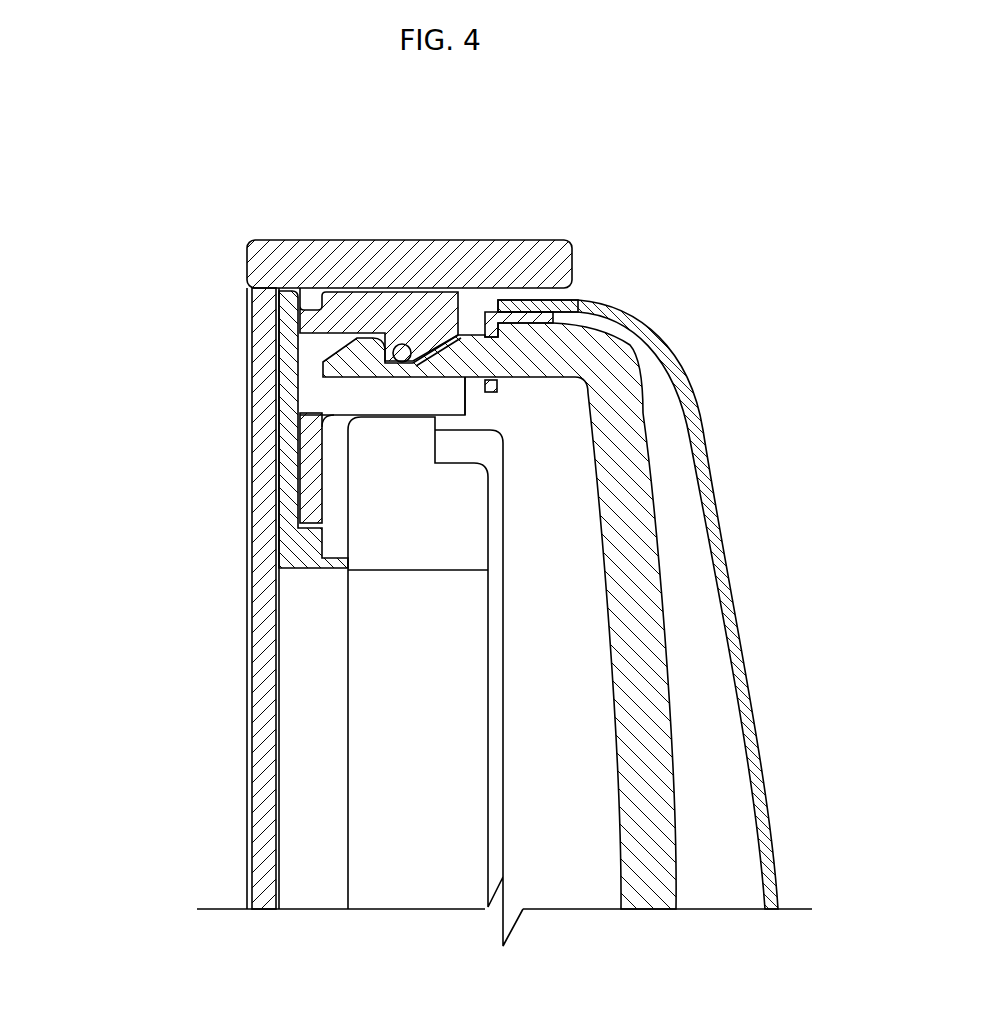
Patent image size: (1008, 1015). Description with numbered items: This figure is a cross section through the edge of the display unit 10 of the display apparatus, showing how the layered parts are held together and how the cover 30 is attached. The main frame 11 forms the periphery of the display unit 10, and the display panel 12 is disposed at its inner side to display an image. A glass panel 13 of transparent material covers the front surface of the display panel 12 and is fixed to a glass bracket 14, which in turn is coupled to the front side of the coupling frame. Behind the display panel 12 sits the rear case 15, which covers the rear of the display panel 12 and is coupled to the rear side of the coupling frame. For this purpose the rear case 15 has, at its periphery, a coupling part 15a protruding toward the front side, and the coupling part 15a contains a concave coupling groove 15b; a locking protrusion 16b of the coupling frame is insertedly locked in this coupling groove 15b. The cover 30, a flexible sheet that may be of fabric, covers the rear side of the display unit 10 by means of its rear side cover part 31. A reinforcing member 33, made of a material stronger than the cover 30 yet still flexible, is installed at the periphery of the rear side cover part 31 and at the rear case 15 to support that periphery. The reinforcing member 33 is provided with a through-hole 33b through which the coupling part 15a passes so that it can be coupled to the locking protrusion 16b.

The display unit 10 is at (150, 392).
The main frame 11 is at (390, 240).
The display panel 12 is at (516, 752).
The glass panel 13 is at (246, 592).
The glass bracket 14 is at (305, 450).
The rear case 15 is at (635, 412).
The coupling part 15a is at (434, 371).
The coupling groove 15b is at (397, 362).
The locking protrusion 16b is at (440, 318).
The cover 30 is at (733, 528).
The rear side cover part 31 is at (741, 617).
The reinforcing member 33 is at (490, 318).
The through-hole 33b is at (500, 350).